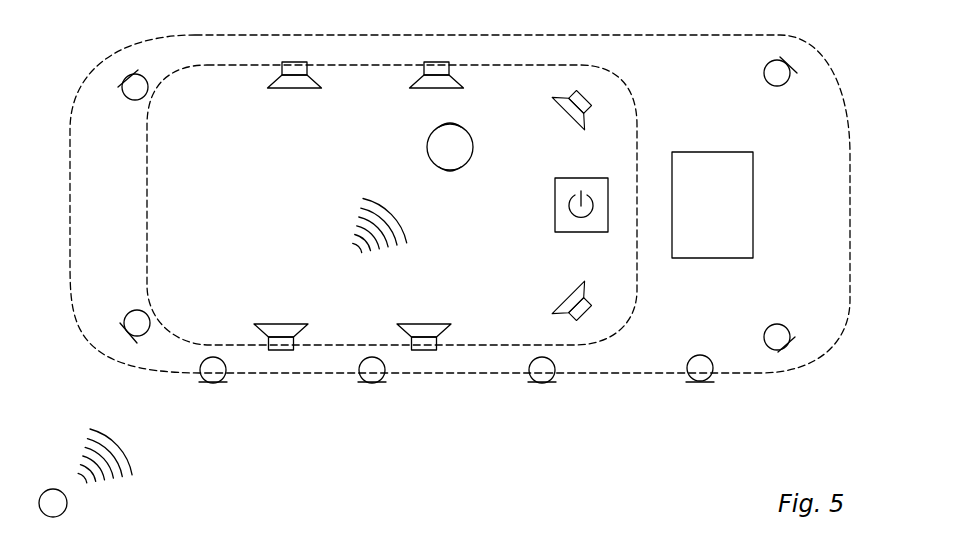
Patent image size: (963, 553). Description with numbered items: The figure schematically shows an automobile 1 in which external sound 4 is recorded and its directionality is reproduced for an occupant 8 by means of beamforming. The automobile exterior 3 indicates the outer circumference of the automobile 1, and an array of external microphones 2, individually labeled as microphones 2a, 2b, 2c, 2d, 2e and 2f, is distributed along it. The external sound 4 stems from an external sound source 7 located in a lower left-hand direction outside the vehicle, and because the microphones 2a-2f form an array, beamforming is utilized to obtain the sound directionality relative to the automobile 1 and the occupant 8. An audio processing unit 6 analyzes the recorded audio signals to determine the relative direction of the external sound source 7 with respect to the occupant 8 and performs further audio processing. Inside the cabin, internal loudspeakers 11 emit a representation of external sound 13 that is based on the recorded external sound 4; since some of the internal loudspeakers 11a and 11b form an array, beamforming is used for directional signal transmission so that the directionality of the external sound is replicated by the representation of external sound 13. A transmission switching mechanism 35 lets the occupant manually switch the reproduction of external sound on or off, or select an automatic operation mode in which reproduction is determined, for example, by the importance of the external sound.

The automobile 1 is at (478, 258).
The external microphone 2 is at (124, 88).
The microphone 2a is at (130, 340).
The microphone 2b is at (206, 385).
The microphone 2c is at (373, 383).
The microphone 2d is at (543, 383).
The microphone 2e is at (702, 385).
The microphone 2f is at (783, 344).
The automobile exterior 3 is at (820, 60).
The external sound 4 is at (153, 480).
The audio processing unit 6 is at (716, 152).
The external sound source 7 is at (68, 505).
The occupant 8 is at (427, 143).
The internal loudspeaker 11 is at (293, 89).
The internal loudspeaker 11a is at (273, 323).
The internal loudspeaker 11b is at (440, 323).
The representation of external sound 13 is at (337, 225).
The transmission switching mechanism 35 is at (553, 210).